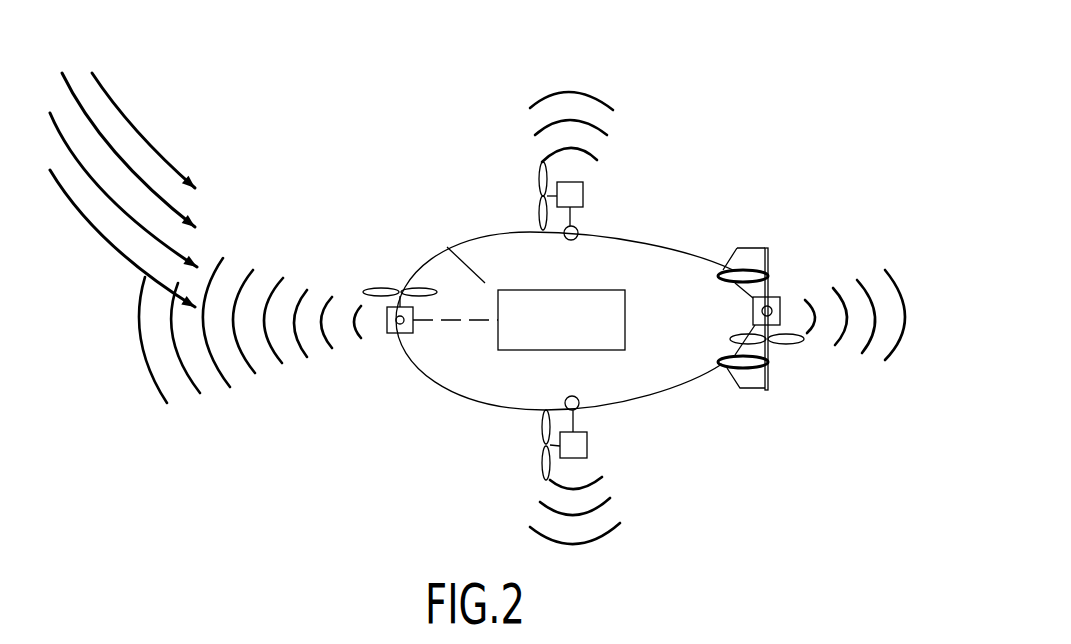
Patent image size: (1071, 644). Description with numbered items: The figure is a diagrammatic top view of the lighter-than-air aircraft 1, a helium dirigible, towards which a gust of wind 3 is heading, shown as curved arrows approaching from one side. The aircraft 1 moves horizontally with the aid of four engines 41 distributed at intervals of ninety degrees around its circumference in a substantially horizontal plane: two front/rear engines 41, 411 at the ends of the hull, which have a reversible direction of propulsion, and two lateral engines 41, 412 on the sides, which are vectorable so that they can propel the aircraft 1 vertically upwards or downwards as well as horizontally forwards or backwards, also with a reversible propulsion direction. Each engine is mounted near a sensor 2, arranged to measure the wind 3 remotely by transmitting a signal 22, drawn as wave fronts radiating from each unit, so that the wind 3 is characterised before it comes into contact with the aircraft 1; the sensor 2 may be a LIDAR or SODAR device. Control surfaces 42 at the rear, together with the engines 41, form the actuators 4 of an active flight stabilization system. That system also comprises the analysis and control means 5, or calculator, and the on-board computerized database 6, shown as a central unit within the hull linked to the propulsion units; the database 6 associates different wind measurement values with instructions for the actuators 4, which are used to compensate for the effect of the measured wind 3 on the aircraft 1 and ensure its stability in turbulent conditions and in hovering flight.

The lighter-than-air aircraft 1 is at (722, 161).
The sensor 2 is at (578, 232).
The wind 3 is at (177, 163).
The actuators 4 is at (576, 322).
The engines 41 is at (576, 322).
The front/rear engines 411 is at (388, 332).
The lateral engines 412 is at (583, 195).
The control surfaces 42 is at (750, 252).
The analysis and control means 5 is at (519, 365).
The database 6 is at (512, 351).
The signal 22 is at (540, 135).